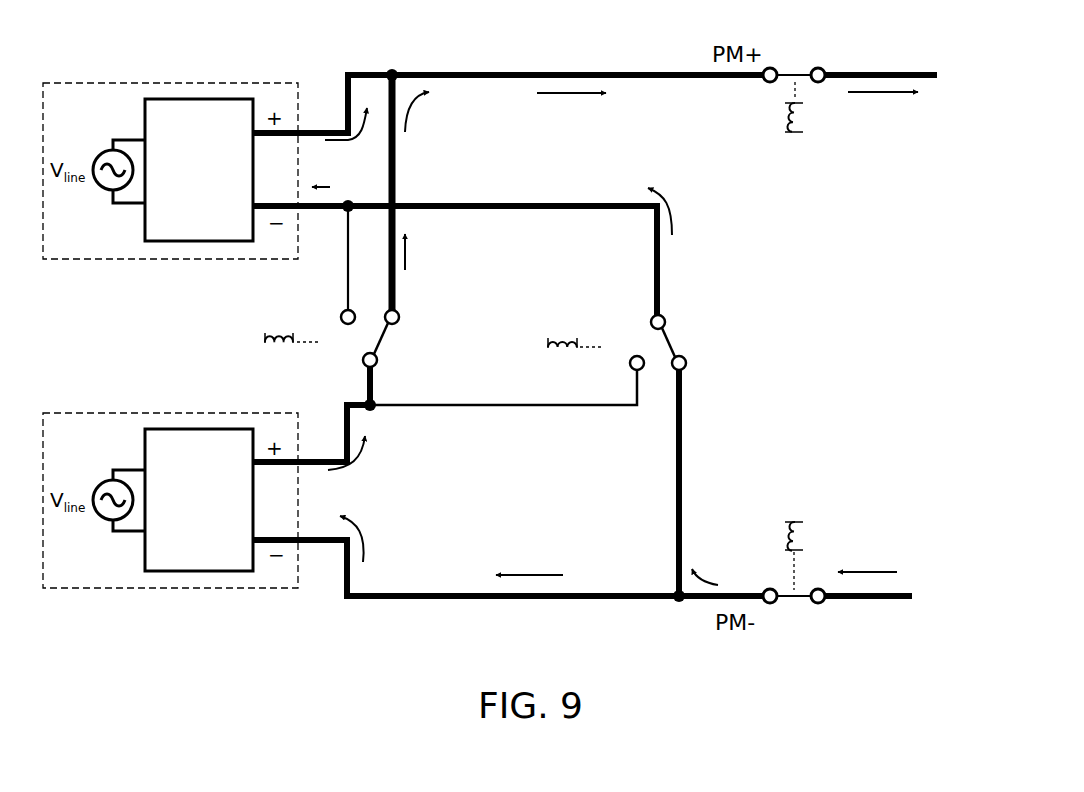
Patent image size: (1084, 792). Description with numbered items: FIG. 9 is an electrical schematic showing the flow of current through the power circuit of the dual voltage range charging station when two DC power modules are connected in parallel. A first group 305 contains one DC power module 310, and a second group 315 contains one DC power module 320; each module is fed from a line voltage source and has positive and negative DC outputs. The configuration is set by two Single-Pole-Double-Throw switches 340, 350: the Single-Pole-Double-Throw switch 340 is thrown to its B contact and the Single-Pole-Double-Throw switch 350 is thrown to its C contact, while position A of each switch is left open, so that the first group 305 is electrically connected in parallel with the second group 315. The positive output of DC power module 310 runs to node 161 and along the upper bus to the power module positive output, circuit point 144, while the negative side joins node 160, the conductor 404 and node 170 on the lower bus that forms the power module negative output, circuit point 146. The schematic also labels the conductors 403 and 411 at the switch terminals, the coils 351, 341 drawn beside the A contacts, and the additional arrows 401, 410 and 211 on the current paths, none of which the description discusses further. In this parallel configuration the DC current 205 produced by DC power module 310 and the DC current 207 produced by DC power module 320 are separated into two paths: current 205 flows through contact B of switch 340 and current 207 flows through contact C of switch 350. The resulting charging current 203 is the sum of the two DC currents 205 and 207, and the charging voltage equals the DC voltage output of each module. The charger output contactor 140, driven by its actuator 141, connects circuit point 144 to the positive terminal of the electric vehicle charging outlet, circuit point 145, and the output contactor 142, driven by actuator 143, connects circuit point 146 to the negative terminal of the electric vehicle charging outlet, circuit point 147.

The first group 305 is at (86, 83).
The DC power module 310 is at (145, 236).
The second group 315 is at (86, 413).
The DC power module 320 is at (145, 566).
The positive node 161 is at (390, 72).
The negative node 160 is at (352, 212).
The negative output node 170 is at (676, 603).
The DC current 205 is at (350, 141).
The DC current 207 is at (362, 527).
The charging current 203 is at (872, 100).
The current flow arrow on negative bus 211 is at (535, 573).
The current flow arrow at switch B 401 is at (672, 208).
The current flow arrow at switch C 410 is at (407, 256).
The negative terminal conductor of switch C 403 is at (347, 270).
The conductor from switch B to negative bus 404 is at (683, 432).
The conductor between switch C and switch B 411 is at (470, 407).
The Single-Pole-Double-Throw switch 350 is at (373, 344).
The actuator coil of switch C 351 is at (265, 342).
The Single-Pole-Double-Throw switch 340 is at (670, 345).
The actuator coil of switch B 341 is at (548, 346).
The circuit point PM+ 144 is at (668, 72).
The circuit point PM− 146 is at (751, 590).
The charger output contactor 140 is at (795, 72).
The actuator 141 is at (796, 135).
The output contactor 142 is at (793, 602).
The actuator 143 is at (795, 519).
The circuit point EV+ 145 is at (915, 72).
The circuit point EV− 147 is at (903, 600).